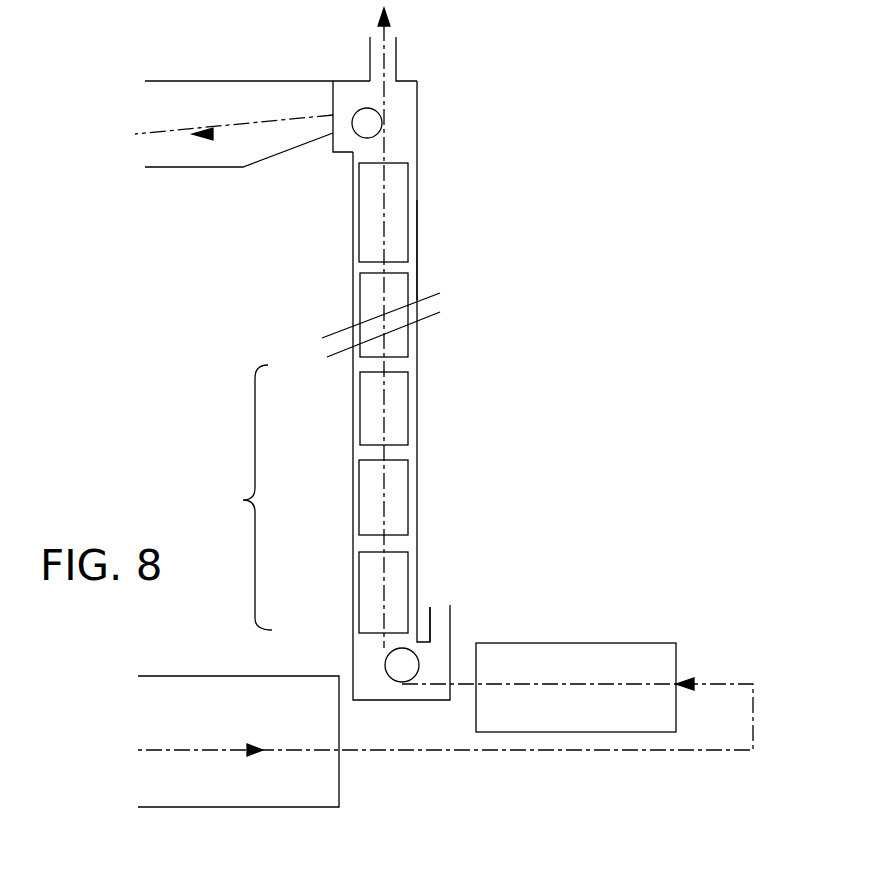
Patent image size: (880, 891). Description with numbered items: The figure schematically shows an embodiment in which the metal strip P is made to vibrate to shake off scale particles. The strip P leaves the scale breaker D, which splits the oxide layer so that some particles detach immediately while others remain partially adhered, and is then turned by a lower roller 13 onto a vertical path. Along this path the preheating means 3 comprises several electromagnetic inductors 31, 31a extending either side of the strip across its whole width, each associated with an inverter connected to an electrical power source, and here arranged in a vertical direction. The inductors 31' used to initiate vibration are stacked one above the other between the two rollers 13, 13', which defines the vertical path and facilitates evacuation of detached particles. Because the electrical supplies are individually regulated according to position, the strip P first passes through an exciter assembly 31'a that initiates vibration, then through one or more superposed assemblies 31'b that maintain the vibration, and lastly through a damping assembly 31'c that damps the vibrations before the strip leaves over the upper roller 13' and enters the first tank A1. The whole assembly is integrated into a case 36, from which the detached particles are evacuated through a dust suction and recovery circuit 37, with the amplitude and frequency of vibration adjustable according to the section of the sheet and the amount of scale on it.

The first tank A1 is at (190, 80).
The dust suction and recovery circuit 37 is at (370, 61).
The roller 13' is at (412, 108).
The preheating means 3 is at (418, 170).
The case 36 is at (418, 247).
The electromagnetic inductor 31a is at (408, 216).
The electromagnetic inductor 31 is at (410, 315).
The damping assembly 31'c is at (438, 408).
The superposed assembly 31'b is at (433, 497).
The exciter assembly 31'a is at (345, 592).
The inductors 31' is at (239, 497).
The roller 13 is at (405, 693).
The strip P is at (462, 683).
The scale breaker D is at (598, 643).